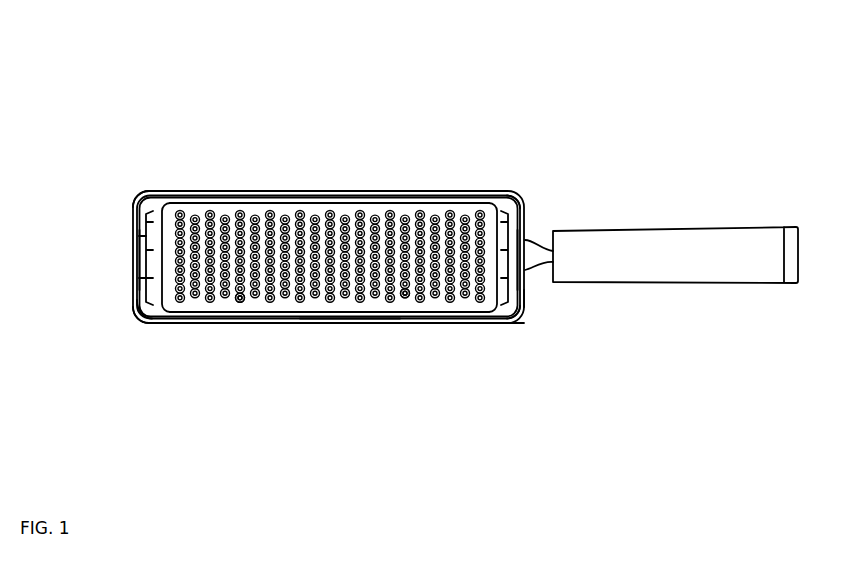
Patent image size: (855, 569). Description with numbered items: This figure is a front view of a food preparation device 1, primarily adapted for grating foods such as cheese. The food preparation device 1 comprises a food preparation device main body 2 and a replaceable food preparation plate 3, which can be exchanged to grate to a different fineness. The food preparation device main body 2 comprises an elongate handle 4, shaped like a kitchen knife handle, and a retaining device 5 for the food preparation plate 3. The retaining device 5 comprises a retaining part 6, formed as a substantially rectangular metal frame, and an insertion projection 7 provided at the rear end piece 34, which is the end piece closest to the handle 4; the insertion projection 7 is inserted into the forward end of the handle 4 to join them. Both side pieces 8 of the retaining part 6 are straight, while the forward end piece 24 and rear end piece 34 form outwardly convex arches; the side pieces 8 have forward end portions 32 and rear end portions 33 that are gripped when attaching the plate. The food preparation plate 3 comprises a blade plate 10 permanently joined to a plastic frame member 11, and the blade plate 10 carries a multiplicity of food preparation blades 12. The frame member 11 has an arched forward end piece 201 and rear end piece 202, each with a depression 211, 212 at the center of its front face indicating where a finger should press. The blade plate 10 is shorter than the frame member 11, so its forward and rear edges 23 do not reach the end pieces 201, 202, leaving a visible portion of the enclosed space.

The food preparation device 1 is at (461, 185).
The food preparation device main body 2 is at (522, 198).
The food preparation plate 3 is at (376, 205).
The handle 4 is at (713, 228).
The retaining device 5 is at (518, 321).
The retaining part 6 is at (347, 323).
The insertion projection 7 is at (546, 252).
The side pieces 8 is at (296, 195).
The blade plate 10 is at (405, 303).
The frame member 11 is at (137, 310).
The food preparation blades 12 is at (240, 302).
The forward and rear edges 23 is at (523, 224).
The forward end piece 24 is at (133, 276).
The forward end portions 32 is at (167, 197).
The rear end portions 33 is at (491, 195).
The rear end piece 34 is at (532, 303).
The forward end piece 201 is at (135, 197).
The rear end piece 202 is at (521, 310).
The depression 211 is at (146, 257).
The depression 212 is at (525, 297).